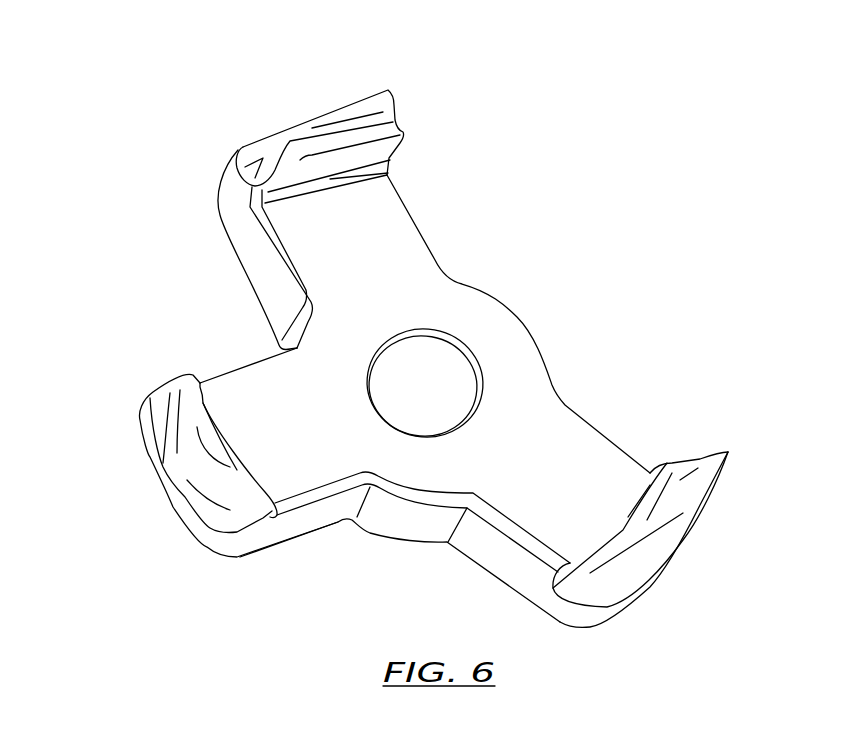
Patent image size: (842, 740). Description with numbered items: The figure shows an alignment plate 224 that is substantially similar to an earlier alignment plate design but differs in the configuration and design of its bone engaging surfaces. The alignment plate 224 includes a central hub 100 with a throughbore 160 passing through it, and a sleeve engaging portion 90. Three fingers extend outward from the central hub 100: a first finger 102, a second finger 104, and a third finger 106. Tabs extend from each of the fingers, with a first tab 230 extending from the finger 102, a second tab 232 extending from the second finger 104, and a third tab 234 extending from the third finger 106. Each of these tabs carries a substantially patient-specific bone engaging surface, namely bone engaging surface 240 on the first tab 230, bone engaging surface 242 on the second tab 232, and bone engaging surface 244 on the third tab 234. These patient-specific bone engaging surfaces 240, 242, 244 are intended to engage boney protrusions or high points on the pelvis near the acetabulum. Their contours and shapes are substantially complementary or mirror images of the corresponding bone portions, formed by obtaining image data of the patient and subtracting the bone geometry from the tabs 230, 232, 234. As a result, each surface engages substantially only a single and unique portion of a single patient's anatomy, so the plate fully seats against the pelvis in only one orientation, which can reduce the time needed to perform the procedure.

The sleeve engaging portion 90 is at (363, 533).
The central hub 100 is at (517, 317).
The finger 102 is at (585, 480).
The second finger 104 is at (250, 260).
The third finger 106 is at (298, 522).
The throughbore 160 is at (411, 364).
The alignment plate 224 is at (605, 288).
The first tab 230 is at (700, 515).
The second tab 232 is at (222, 168).
The third tab 234 is at (168, 502).
The patient-specific bone engaging surface 240 is at (698, 468).
The patient-specific bone engaging surface 242 is at (337, 127).
The patient-specific bone engaging surface 244 is at (187, 450).